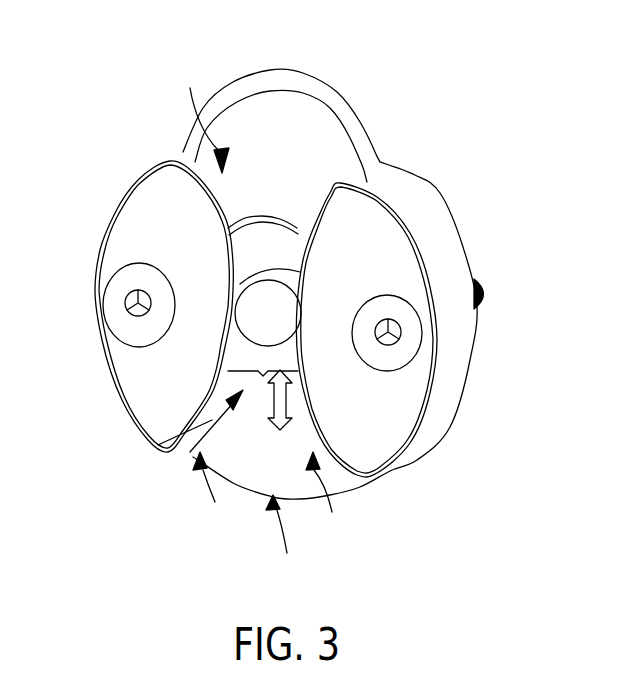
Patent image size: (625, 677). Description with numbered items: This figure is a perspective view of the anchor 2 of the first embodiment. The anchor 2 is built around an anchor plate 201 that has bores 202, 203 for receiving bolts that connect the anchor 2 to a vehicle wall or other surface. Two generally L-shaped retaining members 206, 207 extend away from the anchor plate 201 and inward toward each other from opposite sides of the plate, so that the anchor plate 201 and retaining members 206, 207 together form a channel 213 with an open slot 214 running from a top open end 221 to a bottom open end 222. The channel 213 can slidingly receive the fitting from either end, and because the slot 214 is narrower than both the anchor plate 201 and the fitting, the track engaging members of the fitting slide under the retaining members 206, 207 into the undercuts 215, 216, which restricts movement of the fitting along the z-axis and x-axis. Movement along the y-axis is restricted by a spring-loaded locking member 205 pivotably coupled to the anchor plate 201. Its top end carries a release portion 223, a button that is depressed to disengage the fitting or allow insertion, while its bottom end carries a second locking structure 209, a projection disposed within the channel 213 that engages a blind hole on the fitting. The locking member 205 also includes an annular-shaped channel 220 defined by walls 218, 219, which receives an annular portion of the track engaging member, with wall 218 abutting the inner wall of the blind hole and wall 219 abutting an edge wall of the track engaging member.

The anchor 2 is at (163, 193).
The anchor plate 201 is at (270, 463).
The bore 202 is at (104, 305).
The bore 203 is at (425, 337).
The locking member 205 is at (308, 143).
The retaining member 206 is at (123, 247).
The retaining member 207 is at (412, 280).
The second locking structure 209 is at (265, 335).
The channel 213 is at (153, 452).
The open slot 214 is at (263, 400).
The undercut 215 is at (214, 495).
The undercut 216 is at (329, 503).
The wall 218 is at (242, 284).
The wall 219 is at (253, 244).
The annular-shaped channel 220 is at (273, 234).
The top open end 221 is at (204, 114).
The bottom open end 222 is at (285, 540).
The release portion 223 is at (246, 110).